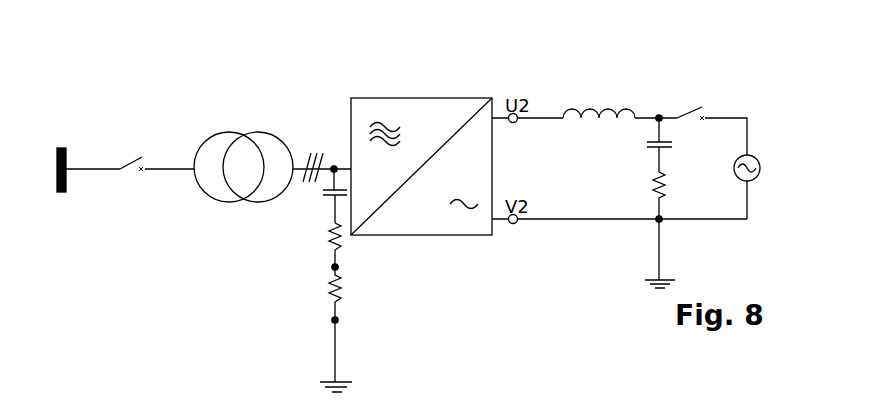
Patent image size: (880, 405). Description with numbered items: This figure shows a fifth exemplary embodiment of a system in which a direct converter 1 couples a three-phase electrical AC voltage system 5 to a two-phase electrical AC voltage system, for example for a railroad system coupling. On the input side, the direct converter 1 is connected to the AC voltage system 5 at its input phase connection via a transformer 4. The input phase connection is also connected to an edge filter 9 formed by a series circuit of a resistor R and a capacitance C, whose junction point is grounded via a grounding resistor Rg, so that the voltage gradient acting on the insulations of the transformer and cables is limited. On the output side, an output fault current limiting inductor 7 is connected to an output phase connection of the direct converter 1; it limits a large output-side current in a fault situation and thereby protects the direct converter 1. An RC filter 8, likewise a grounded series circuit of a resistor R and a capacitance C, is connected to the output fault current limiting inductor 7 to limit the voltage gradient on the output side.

The direct converter 1 is at (397, 97).
The transformer 4 is at (230, 133).
The three-phase electrical AC voltage system 5 is at (69, 137).
The output fault current limiting inductor 7 is at (582, 110).
The RC filter 8 is at (645, 160).
The edge filter 9 is at (315, 258).